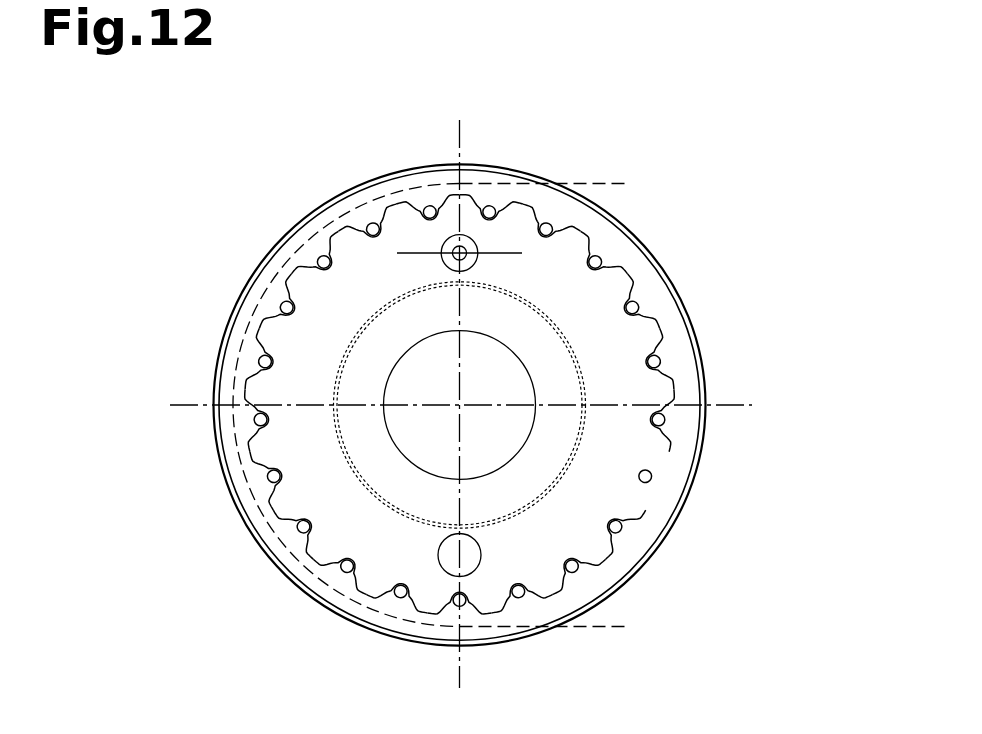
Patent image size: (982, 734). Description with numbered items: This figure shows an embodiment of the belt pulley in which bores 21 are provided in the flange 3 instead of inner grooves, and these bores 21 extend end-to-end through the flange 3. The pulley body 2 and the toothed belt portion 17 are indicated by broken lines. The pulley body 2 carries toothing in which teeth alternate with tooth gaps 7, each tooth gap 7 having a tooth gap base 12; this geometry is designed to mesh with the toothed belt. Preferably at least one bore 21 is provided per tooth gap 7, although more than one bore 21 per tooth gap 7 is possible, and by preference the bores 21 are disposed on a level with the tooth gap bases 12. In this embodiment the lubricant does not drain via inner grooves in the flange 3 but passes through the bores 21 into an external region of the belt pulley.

The pulley body 2 is at (633, 333).
The flange 3 is at (722, 347).
The tooth gap 7 is at (366, 196).
The tooth gap base 12 is at (685, 370).
The toothed belt portion 17 is at (612, 159).
The bore 21 is at (671, 478).